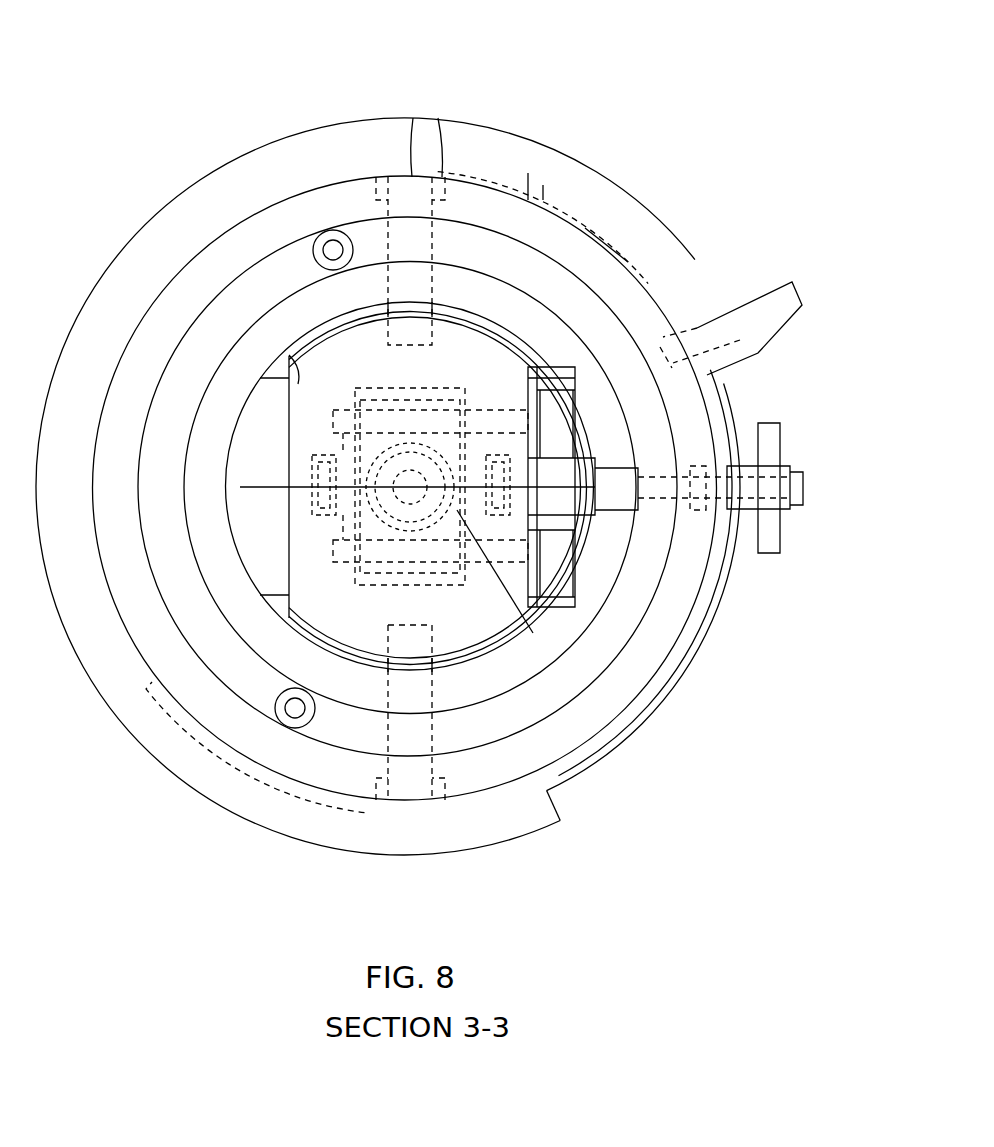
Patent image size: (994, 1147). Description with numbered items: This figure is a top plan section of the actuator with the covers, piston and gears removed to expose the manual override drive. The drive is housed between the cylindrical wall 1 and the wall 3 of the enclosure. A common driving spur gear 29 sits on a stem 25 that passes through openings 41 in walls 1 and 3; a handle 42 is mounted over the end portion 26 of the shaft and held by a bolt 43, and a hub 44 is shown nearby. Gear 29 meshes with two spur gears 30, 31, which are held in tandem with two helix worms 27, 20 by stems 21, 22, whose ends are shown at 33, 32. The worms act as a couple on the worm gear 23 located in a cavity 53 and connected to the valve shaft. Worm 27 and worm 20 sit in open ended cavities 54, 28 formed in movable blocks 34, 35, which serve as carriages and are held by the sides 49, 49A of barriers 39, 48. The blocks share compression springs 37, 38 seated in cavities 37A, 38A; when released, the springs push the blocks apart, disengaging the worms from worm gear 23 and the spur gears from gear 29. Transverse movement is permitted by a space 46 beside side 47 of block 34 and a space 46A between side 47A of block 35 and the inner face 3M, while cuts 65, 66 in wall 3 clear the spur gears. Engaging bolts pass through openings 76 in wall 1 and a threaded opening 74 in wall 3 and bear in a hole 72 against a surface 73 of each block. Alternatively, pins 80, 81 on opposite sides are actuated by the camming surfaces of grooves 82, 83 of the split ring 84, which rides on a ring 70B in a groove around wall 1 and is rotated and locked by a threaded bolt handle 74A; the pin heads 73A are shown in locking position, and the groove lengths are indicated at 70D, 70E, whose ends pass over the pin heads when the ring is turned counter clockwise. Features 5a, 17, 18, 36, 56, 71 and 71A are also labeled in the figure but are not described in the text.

The cylindrical wall 1 is at (663, 232).
The wall 3 is at (311, 689).
The inner face 3M is at (182, 270).
The shaft bore 5a is at (393, 502).
The bolt hole 17 is at (388, 213).
The rim portion 18 is at (697, 310).
The worm 20 is at (437, 586).
The stem 21 is at (347, 412).
The stem 22 is at (368, 590).
The worm gear 23 is at (347, 440).
The stem 25 is at (660, 490).
The end portion 26 is at (747, 487).
The worm 27 is at (533, 171).
The open ended cavity 28 is at (360, 605).
The common driving spur gear 29 is at (560, 468).
The spur gear 30 is at (553, 448).
The spur gear 31 is at (553, 580).
The end of stem 32 is at (240, 558).
The end of stem 33 is at (226, 426).
The block 34 is at (290, 350).
The block 35 is at (290, 642).
The ring portion 36 is at (240, 488).
The compression spring 37 is at (310, 510).
The cavity 37A is at (312, 460).
The compression spring 38 is at (560, 543).
The cavity 38A is at (405, 392).
The barrier 39 is at (280, 367).
The opening 41 is at (764, 473).
The handle 42 is at (772, 533).
The bolt 43 is at (798, 493).
The hub 44 is at (740, 540).
The space 46 is at (300, 283).
The space 46A is at (463, 660).
The side 47 is at (322, 278).
The side 47A is at (510, 642).
The barrier 48 is at (562, 346).
The side 49 is at (283, 507).
The side 49A is at (561, 487).
The cavity 53 is at (512, 635).
The open ended cavity 54 is at (556, 180).
The key 56 is at (693, 470).
The cut 65 is at (562, 600).
The cut 66 is at (575, 373).
The ring 70B is at (680, 677).
The length of camming groove 70D is at (438, 118).
The end of camming surface 70E is at (700, 300).
The slot 71 is at (378, 190).
The lower slot 71A is at (377, 783).
The hole 72 is at (403, 393).
The surface 73 is at (403, 345).
The pin head 73A is at (413, 118).
The threaded opening 74 is at (432, 278).
The bolt handle 74A is at (798, 293).
The opening 76 is at (445, 200).
The pin 80 is at (350, 250).
The pin 81 is at (433, 743).
The camming groove 82 is at (597, 207).
The camming groove 83 is at (237, 773).
The split ring 84 is at (148, 222).